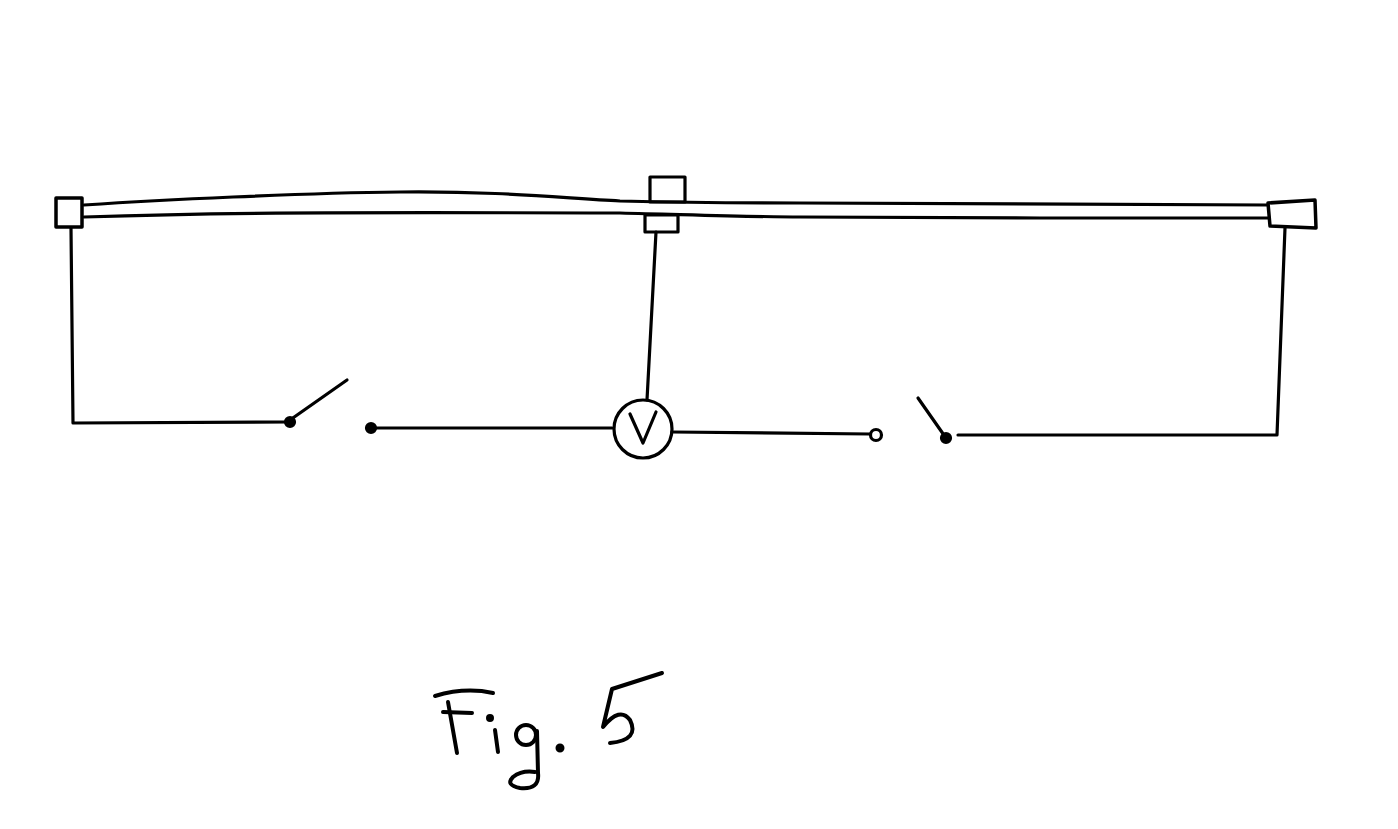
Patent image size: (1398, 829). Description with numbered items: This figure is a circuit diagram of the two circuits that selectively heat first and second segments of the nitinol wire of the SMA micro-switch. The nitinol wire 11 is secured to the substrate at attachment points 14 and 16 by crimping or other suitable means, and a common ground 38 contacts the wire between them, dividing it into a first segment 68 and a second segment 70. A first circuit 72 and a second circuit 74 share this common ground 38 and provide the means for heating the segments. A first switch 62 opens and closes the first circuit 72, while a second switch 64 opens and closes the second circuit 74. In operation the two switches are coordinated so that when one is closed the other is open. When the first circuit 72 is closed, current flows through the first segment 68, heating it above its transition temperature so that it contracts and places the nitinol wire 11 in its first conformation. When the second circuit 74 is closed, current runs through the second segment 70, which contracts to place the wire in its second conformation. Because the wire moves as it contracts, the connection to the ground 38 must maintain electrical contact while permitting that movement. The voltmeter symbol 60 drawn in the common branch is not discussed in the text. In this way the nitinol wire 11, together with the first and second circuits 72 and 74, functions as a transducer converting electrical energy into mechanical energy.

The nitinol wire 11 is at (953, 202).
The attachment point 14 is at (66, 192).
The attachment point 16 is at (1293, 192).
The common ground 38 is at (675, 168).
The voltmeter 60 is at (644, 475).
The first switch 62 is at (322, 378).
The second switch 64 is at (940, 407).
The first segment 68 is at (362, 138).
The second segment 70 is at (882, 170).
The first circuit 72 is at (434, 452).
The second circuit 74 is at (1168, 465).